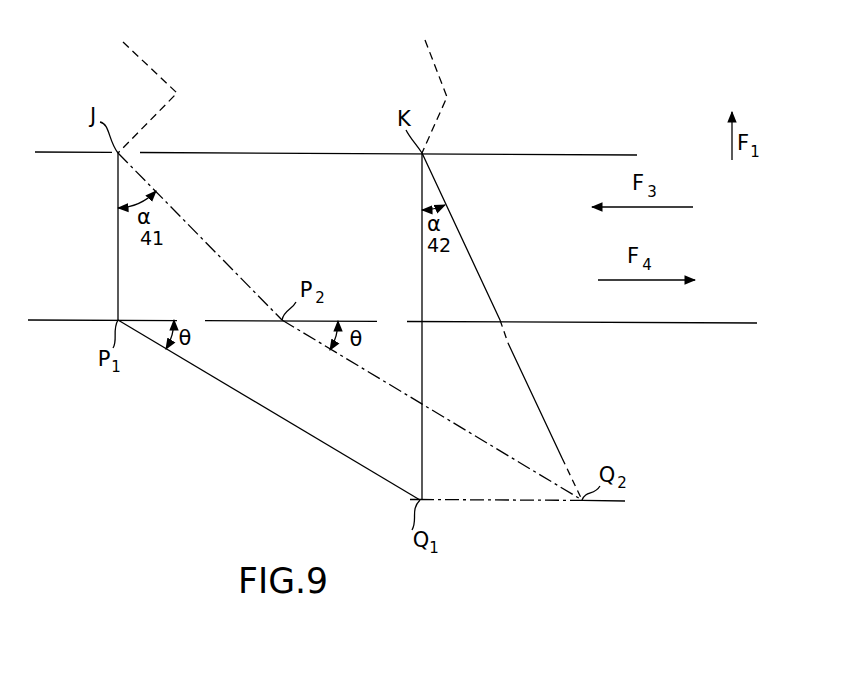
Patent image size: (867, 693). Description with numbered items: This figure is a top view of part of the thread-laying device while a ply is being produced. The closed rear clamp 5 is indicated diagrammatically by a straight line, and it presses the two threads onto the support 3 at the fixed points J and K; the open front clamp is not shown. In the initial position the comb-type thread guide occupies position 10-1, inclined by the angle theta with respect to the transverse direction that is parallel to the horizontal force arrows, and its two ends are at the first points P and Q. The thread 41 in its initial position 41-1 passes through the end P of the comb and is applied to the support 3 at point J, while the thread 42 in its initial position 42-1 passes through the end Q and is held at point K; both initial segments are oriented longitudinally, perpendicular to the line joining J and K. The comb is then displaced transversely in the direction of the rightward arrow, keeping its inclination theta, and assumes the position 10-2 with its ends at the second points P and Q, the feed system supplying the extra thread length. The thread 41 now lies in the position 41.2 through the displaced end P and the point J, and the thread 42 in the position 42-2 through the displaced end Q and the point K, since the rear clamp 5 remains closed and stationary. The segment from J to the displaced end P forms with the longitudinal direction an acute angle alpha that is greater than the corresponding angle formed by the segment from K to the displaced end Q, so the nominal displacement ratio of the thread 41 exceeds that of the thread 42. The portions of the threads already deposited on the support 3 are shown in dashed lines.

The support 3 is at (275, 130).
The rear clamp 5 is at (615, 154).
The thread 41 is at (148, 66).
The thread in initial position 41-1 is at (118, 248).
The thread in displaced position 41.2 is at (222, 250).
The thread 42 is at (440, 117).
The thread in initial position 42-1 is at (422, 305).
The thread in displaced position 42-2 is at (475, 264).
The thread guide in initial position 10-1 is at (227, 384).
The thread guide in displaced position 10-2 is at (445, 415).